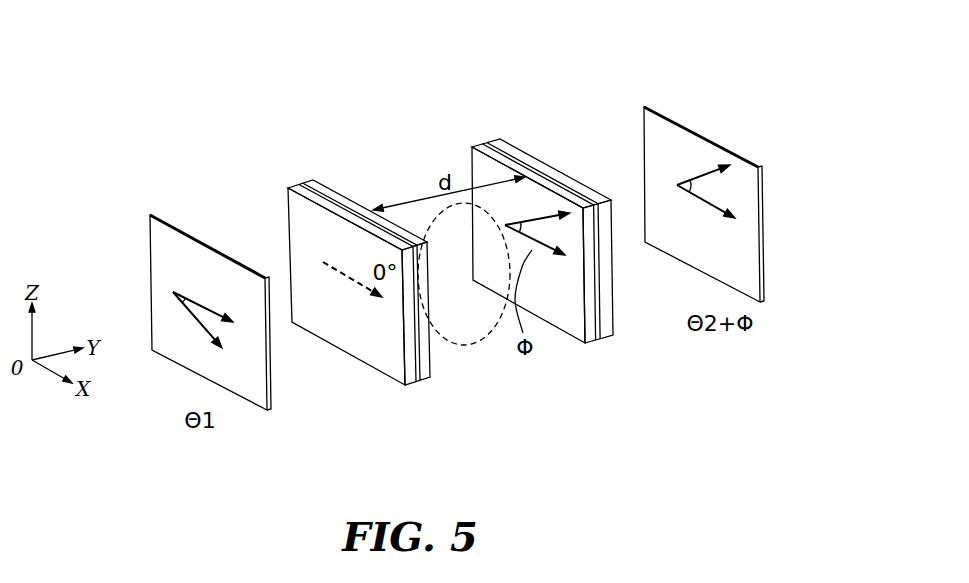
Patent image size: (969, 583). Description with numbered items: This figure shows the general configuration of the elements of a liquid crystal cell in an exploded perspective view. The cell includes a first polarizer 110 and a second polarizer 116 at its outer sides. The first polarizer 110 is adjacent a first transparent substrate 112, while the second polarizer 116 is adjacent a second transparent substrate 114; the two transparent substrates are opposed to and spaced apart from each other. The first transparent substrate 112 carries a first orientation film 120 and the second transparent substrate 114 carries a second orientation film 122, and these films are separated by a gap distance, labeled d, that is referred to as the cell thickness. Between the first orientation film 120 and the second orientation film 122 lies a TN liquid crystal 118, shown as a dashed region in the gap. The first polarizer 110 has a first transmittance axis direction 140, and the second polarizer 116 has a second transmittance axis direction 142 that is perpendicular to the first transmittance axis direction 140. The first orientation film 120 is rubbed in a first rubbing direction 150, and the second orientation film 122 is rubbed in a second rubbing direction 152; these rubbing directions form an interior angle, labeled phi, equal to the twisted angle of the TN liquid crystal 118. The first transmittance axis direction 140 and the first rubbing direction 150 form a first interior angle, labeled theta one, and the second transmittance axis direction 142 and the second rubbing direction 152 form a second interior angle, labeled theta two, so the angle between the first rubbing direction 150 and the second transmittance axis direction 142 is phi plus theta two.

The first polarizer 110 is at (237, 383).
The first transparent substrate 112 is at (365, 353).
The second transparent substrate 114 is at (610, 330).
The second polarizer 116 is at (743, 290).
The TN liquid crystal 118 is at (472, 343).
The first orientation film 120 is at (430, 380).
The second orientation film 122 is at (553, 313).
The first transmittance axis direction 140 is at (190, 403).
The second transmittance axis direction 142 is at (717, 305).
The first rubbing direction 150 is at (356, 273).
The second rubbing direction 152 is at (542, 215).